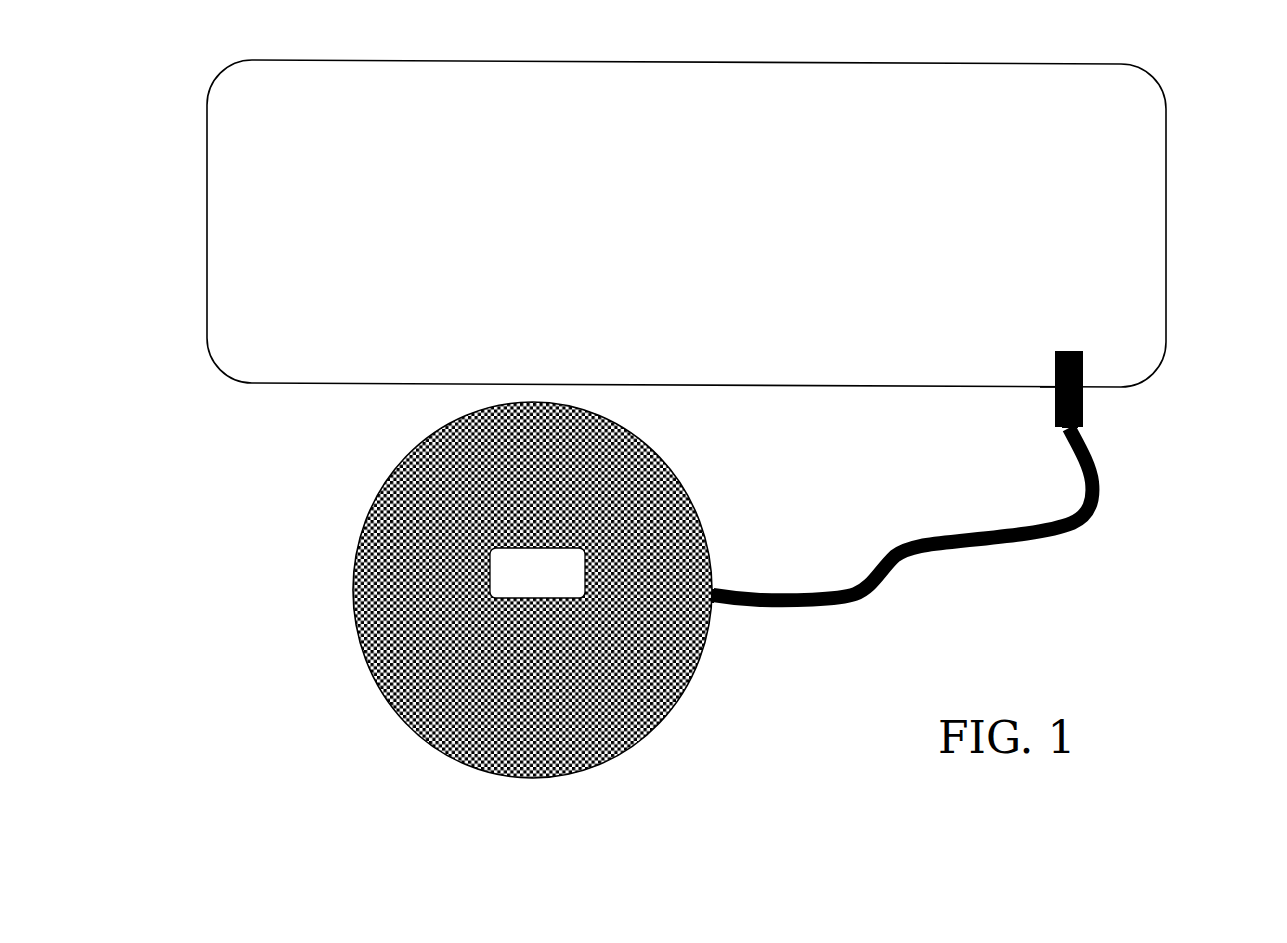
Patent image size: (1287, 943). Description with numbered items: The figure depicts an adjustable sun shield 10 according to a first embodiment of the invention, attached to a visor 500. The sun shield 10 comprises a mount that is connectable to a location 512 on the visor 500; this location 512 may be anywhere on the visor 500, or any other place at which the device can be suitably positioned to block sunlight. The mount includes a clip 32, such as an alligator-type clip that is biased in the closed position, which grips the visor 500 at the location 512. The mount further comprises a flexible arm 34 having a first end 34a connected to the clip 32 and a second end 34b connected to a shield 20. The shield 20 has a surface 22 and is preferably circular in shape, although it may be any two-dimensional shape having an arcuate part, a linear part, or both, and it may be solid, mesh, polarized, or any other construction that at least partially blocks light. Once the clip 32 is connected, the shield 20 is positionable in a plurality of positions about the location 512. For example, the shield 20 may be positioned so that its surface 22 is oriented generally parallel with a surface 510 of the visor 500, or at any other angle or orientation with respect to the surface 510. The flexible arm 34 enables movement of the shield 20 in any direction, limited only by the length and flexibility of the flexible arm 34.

The adjustable sun shield 10 is at (333, 709).
The shield 20 is at (677, 490).
The surface 22 is at (537, 573).
The clip 32 is at (1083, 357).
The flexible arm 34 is at (967, 547).
The first end 34a is at (1080, 427).
The second end 34b is at (713, 583).
The visor 500 is at (1147, 153).
The surface 510 is at (693, 203).
The location 512 is at (1038, 362).